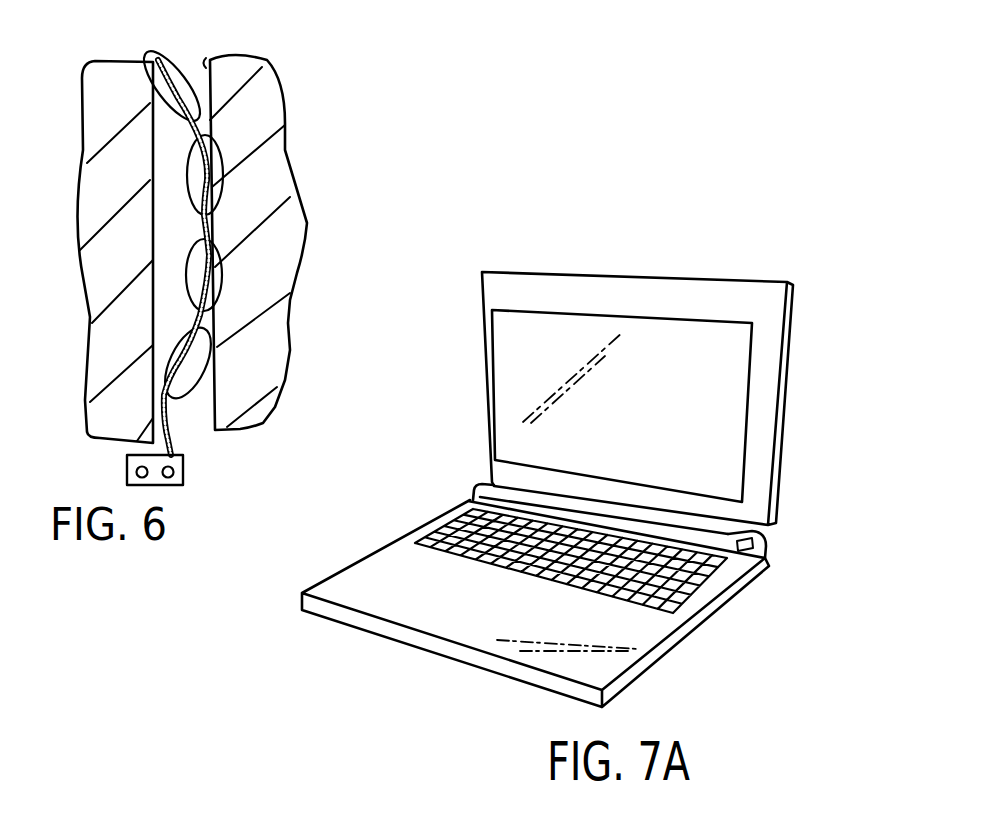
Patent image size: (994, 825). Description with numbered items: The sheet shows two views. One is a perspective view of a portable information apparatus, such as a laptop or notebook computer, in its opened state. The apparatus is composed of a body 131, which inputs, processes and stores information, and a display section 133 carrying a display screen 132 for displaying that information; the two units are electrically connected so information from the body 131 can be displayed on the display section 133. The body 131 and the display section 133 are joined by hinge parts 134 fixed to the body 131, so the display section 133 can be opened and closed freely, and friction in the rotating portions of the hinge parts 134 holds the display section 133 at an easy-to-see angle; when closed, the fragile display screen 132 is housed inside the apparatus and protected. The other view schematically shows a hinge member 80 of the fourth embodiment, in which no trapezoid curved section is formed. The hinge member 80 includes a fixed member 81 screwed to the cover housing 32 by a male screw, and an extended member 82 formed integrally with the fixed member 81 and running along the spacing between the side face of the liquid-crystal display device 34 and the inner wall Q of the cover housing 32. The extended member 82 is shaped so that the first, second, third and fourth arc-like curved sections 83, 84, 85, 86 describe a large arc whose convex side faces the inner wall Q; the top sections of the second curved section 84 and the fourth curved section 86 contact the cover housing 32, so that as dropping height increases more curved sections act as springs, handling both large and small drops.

In FIG. 6, the cover housing 32 is at (283, 165).
In FIG. 6, the liquid-crystal display device 34 is at (82, 192).
In FIG. 6, the inner wall Q is at (212, 54).
In FIG. 6, the hinge member 80 is at (187, 478).
In FIG. 6, the fixed member 81 is at (130, 463).
In FIG. 6, the extended member 82 is at (177, 447).
In FIG. 6, the first arc-like curved section 83 is at (207, 367).
In FIG. 6, the second arc-like curved section 84 is at (227, 273).
In FIG. 6, the third arc-like curved section 85 is at (217, 150).
In FIG. 6, the fourth arc-like curved section 86 is at (177, 54).
In FIG. 7A, the body 131 is at (407, 633).
In FIG. 7A, the display screen 132 is at (737, 392).
In FIG. 7A, the display section 133 is at (793, 323).
In FIG. 7A, the hinge parts 134 is at (488, 487).